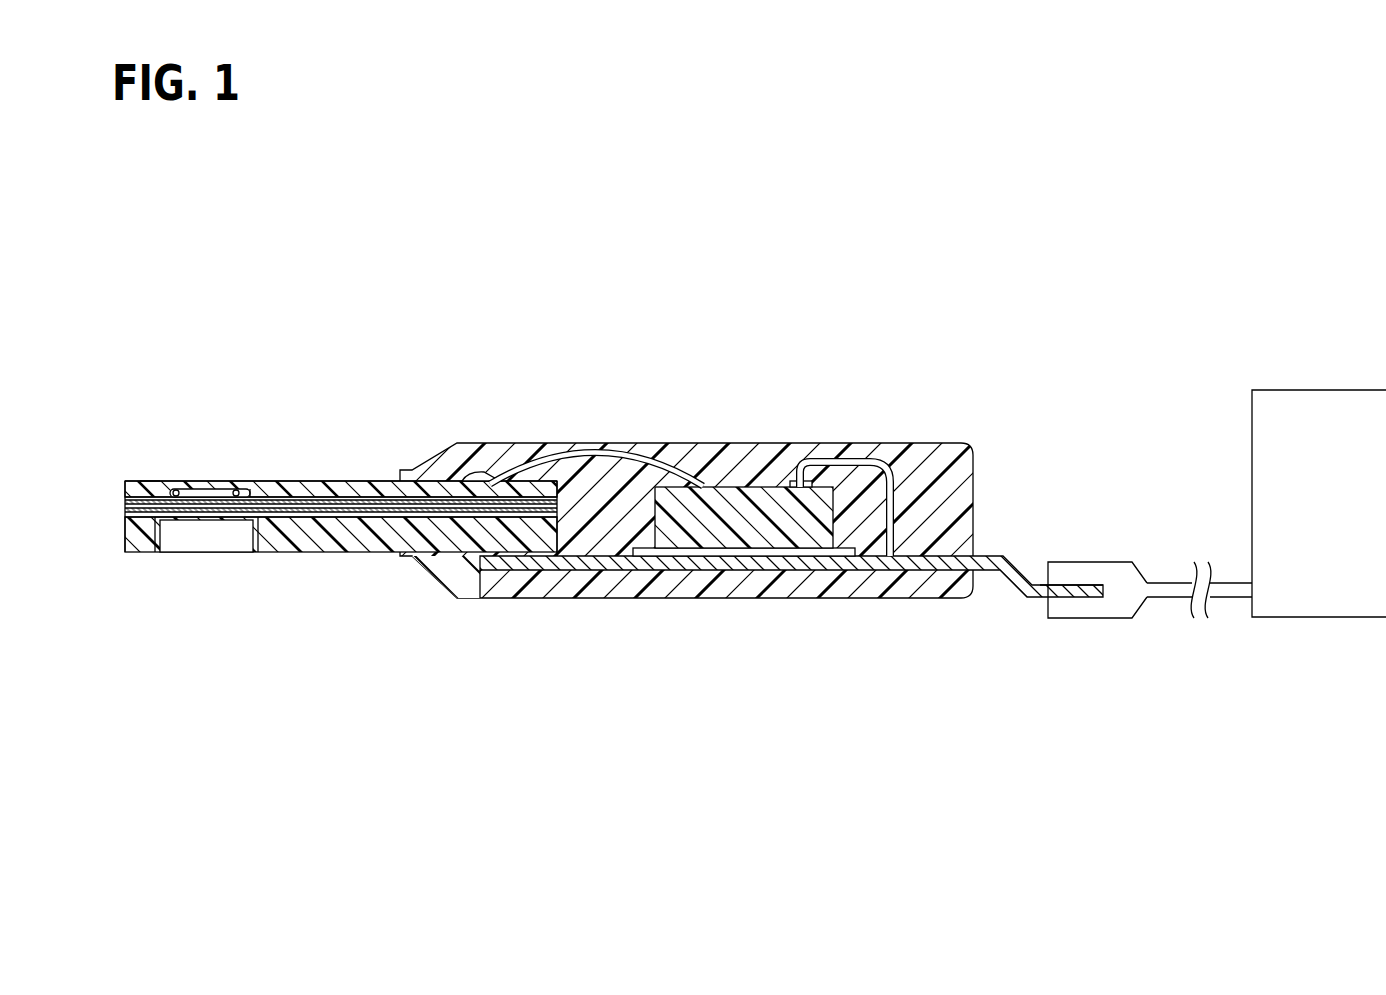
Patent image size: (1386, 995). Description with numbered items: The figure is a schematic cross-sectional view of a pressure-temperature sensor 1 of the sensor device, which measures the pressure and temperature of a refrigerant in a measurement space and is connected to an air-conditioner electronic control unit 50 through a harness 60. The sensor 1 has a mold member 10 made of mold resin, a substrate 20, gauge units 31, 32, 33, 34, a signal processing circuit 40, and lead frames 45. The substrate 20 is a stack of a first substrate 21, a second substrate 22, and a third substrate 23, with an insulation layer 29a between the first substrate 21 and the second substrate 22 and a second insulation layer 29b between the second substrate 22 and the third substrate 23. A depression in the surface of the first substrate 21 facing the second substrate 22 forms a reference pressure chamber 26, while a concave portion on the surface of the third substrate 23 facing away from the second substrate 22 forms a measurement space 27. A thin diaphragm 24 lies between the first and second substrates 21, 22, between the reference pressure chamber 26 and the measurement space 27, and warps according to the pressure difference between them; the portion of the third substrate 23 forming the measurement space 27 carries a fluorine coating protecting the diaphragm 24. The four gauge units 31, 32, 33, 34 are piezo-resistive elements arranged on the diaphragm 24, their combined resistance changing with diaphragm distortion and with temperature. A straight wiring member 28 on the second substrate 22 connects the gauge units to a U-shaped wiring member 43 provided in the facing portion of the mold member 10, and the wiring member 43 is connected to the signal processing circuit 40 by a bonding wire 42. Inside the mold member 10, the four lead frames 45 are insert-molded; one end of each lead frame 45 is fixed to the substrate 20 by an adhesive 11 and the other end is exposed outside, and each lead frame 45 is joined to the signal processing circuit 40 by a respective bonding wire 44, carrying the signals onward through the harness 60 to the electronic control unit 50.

The pressure-temperature sensor 1 is at (600, 428).
The mold member 10 is at (937, 443).
The adhesive 11 is at (538, 571).
The substrate 20 is at (333, 504).
The first substrate 21 is at (125, 488).
The second substrate 22 is at (125, 508).
The third substrate 23 is at (333, 545).
The thin diaphragm 24 is at (203, 526).
The reference pressure chamber 26 is at (202, 497).
The measurement space 27 is at (175, 549).
The wiring member 28 is at (333, 474).
The insulation layer 29a is at (317, 500).
The insulation layer 29b is at (300, 518).
The gauge unit 31 is at (150, 482).
The gauge unit 32 is at (178, 489).
The gauge unit 33 is at (236, 492).
The gauge unit 34 is at (250, 488).
The signal processing circuit 40 is at (763, 487).
The bonding wire 42 is at (599, 456).
The wiring member 43 is at (506, 476).
The bonding wire 44 is at (851, 462).
The lead frame 45 is at (1084, 585).
The electronic control unit 50 is at (1299, 390).
The harness 60 is at (1162, 583).